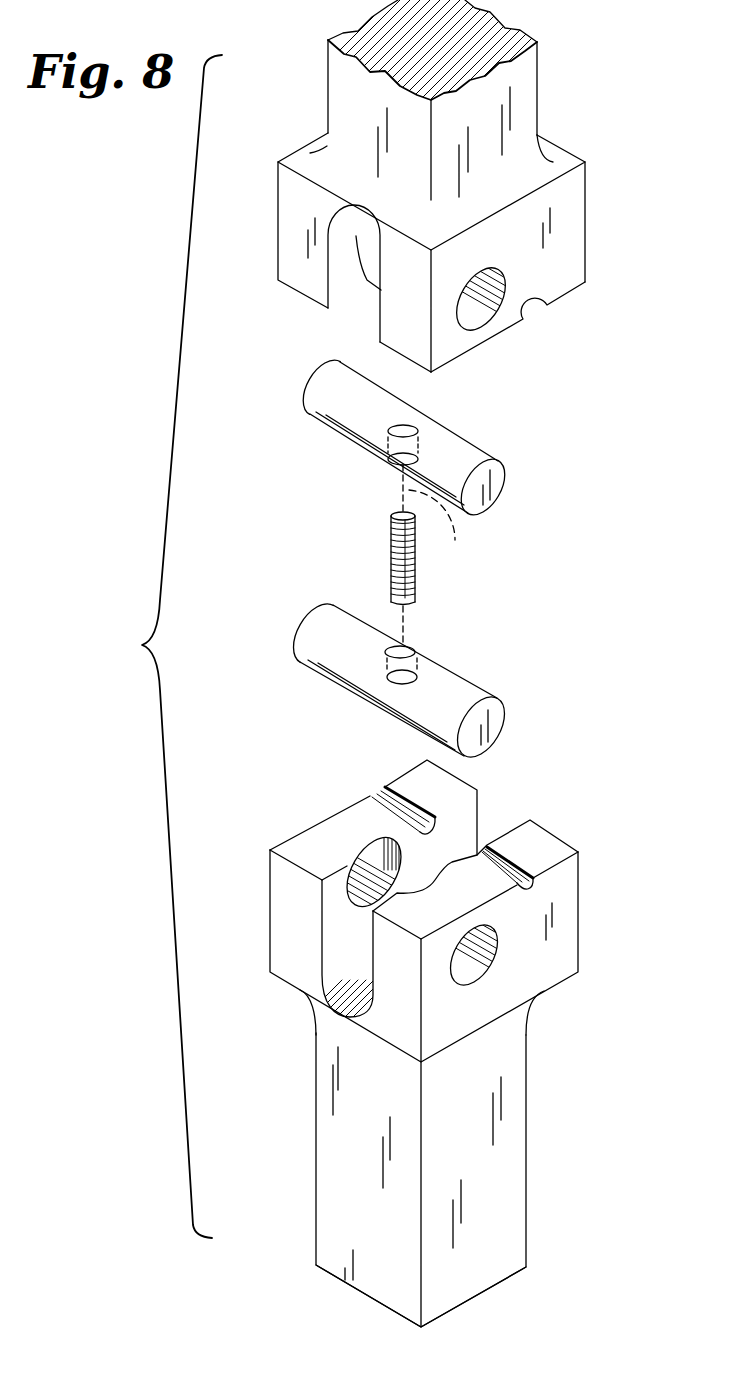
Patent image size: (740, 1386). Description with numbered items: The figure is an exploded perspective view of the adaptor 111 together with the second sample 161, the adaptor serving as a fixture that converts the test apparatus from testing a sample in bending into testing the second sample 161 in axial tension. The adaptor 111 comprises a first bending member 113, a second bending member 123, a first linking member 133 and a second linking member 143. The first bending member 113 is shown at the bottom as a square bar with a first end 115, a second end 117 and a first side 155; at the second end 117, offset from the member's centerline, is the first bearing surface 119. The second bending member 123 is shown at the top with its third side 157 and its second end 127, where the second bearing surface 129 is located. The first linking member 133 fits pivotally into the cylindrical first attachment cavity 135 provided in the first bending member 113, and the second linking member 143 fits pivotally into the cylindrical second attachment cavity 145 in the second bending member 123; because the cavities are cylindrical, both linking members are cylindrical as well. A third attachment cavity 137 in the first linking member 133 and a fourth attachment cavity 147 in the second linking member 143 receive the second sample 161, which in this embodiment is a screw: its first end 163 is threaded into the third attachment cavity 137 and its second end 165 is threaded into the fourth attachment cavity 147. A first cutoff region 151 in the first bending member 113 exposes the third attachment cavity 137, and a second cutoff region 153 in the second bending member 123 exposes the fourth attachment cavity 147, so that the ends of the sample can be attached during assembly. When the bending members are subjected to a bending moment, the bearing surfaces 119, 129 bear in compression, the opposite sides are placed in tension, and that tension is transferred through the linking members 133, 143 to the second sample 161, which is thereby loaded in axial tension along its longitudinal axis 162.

The adaptor 111 is at (155, 646).
The first bending member 113 is at (510, 1162).
The first end 115 is at (485, 1275).
The second end 117 is at (567, 877).
The first bearing surface 119 is at (383, 800).
The second bending member 123 is at (525, 85).
The second end 127 is at (577, 218).
The second bearing surface 129 is at (537, 310).
The first linking member 133 is at (470, 690).
The first attachment cavity 135 is at (475, 973).
The third attachment cavity 137 is at (407, 647).
The second linking member 143 is at (467, 443).
The second attachment cavity 145 is at (473, 320).
The fourth attachment cavity 147 is at (393, 473).
The first cutoff region 151 is at (335, 945).
The second cutoff region 153 is at (363, 313).
The first side 155 is at (333, 1150).
The third side 157 is at (337, 88).
The second sample 161 is at (390, 560).
The longitudinal axis 162 is at (446, 531).
The first end 163 is at (413, 600).
The second end 165 is at (390, 512).